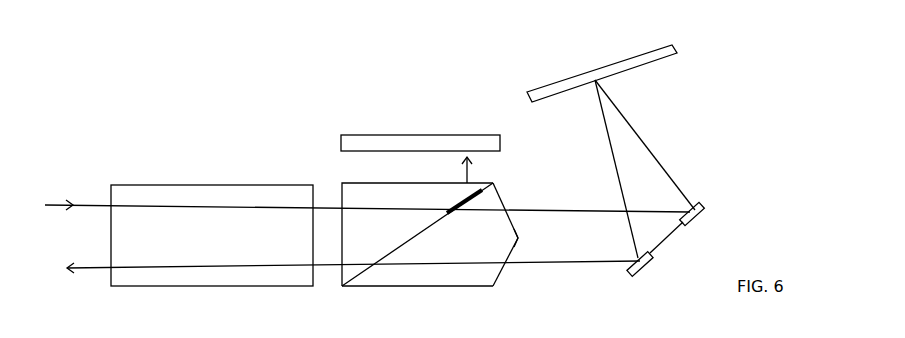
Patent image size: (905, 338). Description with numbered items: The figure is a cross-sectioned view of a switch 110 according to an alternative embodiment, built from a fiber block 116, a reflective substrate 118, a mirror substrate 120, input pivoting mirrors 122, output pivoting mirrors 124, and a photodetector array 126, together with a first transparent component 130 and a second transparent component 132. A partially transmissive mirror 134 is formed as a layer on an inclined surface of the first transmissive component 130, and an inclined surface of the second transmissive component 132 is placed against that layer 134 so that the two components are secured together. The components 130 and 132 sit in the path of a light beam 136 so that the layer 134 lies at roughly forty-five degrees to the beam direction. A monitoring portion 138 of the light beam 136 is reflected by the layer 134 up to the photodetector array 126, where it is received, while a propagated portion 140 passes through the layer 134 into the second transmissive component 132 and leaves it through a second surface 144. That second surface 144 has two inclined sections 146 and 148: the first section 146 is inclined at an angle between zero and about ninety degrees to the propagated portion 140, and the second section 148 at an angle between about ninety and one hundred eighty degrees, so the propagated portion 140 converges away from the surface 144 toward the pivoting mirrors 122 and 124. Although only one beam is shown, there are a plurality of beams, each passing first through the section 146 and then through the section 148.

The switch 110 is at (95, 112).
The fiber block 116 is at (214, 197).
The reflective substrate 118 is at (632, 62).
The mirror substrate 120 is at (687, 222).
The input pivoting mirrors 122 is at (698, 202).
The output pivoting mirrors 124 is at (635, 273).
The photodetector array 126 is at (423, 133).
The first transparent component 130 is at (362, 197).
The second transparent component 132 is at (458, 278).
The partially transmissive mirror 134 is at (483, 182).
The light beam 136 is at (367, 194).
The monitoring portion 138 is at (446, 169).
The propagated portion 140 is at (346, 229).
The second surface 144 is at (518, 238).
The first section 146 is at (510, 218).
The second section 148 is at (510, 257).